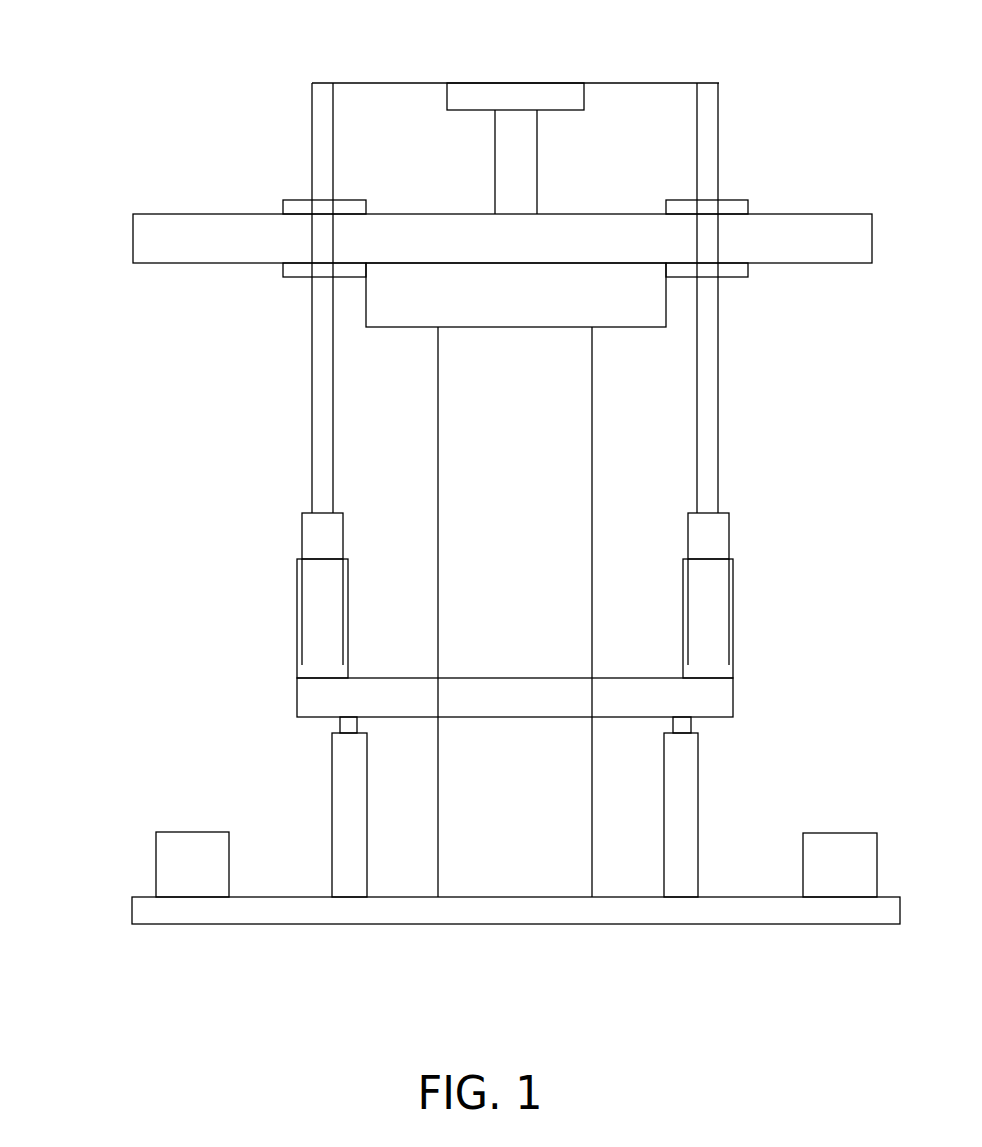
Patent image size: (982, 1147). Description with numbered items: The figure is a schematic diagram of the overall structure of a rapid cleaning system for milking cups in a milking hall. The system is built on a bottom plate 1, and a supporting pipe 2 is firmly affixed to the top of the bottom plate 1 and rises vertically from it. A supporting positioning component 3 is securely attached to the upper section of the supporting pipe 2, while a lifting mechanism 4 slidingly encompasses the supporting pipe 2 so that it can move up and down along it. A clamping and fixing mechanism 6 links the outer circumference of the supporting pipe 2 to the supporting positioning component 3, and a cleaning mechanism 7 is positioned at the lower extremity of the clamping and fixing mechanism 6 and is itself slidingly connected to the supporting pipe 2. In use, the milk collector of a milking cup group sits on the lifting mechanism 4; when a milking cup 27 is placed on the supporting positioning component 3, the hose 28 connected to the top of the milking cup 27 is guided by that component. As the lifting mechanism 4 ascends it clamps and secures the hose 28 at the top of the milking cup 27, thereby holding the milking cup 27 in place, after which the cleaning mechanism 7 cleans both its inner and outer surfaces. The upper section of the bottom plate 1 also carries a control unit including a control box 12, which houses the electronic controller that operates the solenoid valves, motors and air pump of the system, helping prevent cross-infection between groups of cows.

The bottom plate 1 is at (516, 966).
The supporting pipe 2 is at (640, 612).
The supporting positioning component 3 is at (451, 144).
The lifting mechanism 4 is at (583, 107).
The clamping and fixing mechanism 6 is at (430, 327).
The cleaning mechanism 7 is at (587, 755).
The control box 12 is at (449, 928).
The milking cup 27 is at (254, 595).
The hose 28 is at (780, 298).